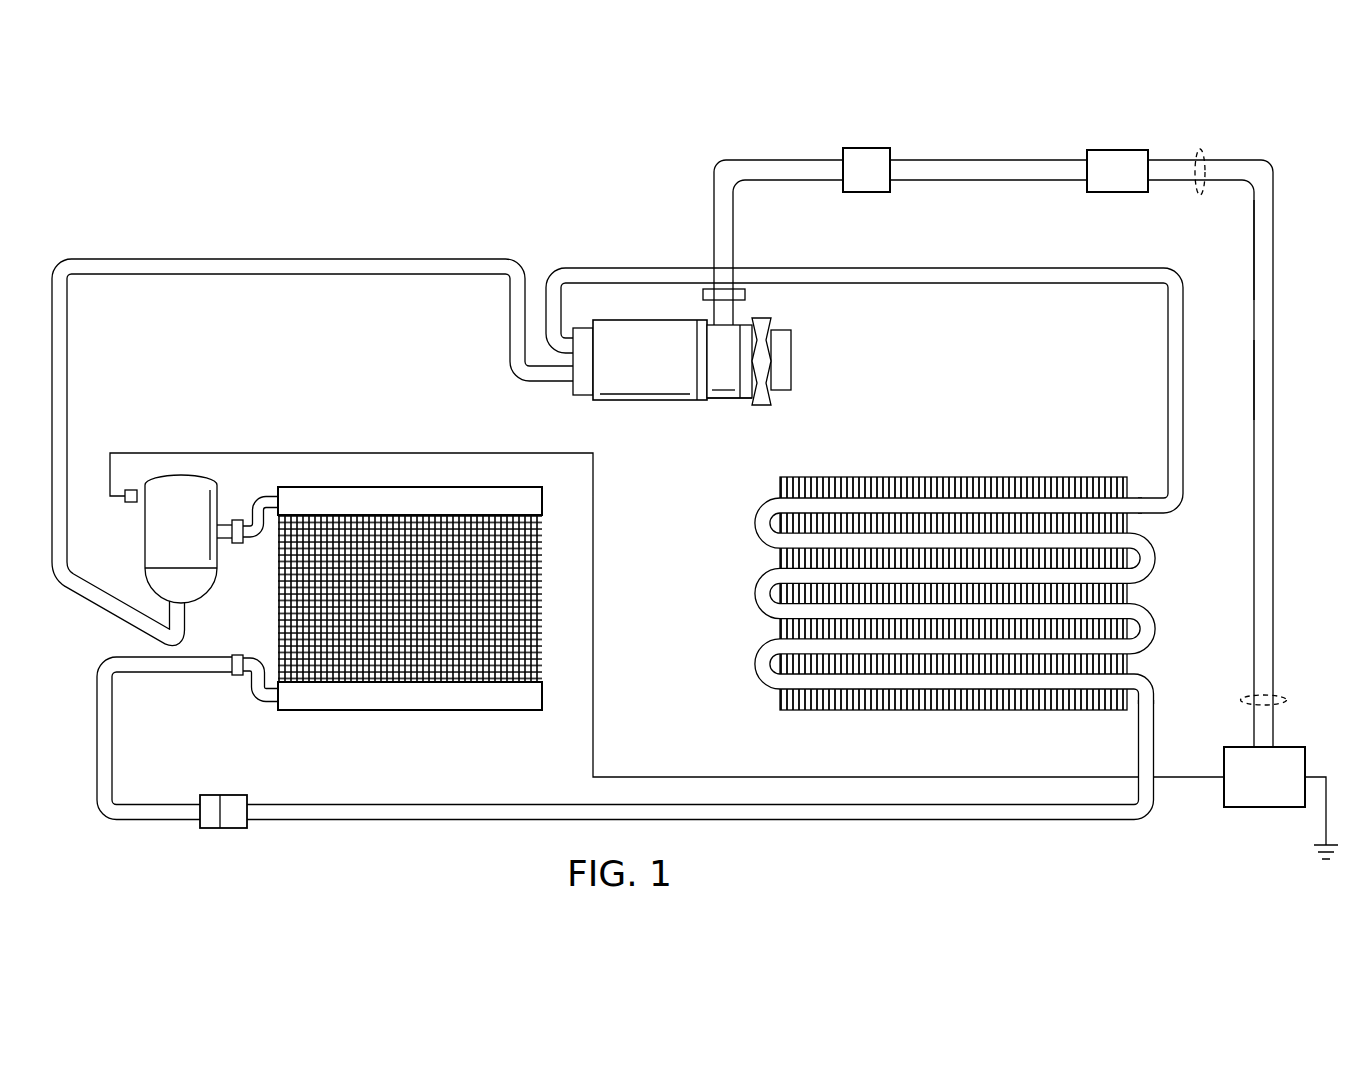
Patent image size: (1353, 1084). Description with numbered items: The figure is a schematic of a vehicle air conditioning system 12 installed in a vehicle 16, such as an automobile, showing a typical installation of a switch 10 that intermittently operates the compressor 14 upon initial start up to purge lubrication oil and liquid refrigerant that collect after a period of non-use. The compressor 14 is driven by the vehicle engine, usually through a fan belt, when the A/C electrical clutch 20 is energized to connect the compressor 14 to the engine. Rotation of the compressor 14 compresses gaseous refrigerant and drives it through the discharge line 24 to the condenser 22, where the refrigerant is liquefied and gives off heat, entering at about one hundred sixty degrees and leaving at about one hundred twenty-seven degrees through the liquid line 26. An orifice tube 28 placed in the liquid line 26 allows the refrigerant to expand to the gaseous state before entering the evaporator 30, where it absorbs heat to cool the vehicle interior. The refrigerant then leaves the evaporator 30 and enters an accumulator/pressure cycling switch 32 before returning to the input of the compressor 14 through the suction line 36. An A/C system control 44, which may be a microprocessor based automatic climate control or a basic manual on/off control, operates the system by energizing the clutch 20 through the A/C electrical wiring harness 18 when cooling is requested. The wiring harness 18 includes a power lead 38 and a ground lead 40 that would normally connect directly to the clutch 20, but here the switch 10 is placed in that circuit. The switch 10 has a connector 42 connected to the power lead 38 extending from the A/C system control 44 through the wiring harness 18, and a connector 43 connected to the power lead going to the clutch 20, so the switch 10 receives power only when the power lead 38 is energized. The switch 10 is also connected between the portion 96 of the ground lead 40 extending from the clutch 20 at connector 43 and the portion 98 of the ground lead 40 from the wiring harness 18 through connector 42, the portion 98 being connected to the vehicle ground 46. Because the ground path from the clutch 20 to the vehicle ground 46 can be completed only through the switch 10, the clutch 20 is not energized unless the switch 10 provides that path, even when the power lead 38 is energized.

The switch 10 is at (873, 147).
The air conditioning system 12 is at (669, 460).
The compressor 14 is at (648, 401).
The vehicle 16 is at (690, 642).
The A/C electrical wiring harness 18 is at (1201, 148).
The A/C electrical clutch 20 is at (736, 399).
The condenser 22 is at (972, 475).
The discharge line 24 is at (984, 265).
The liquid line 26 is at (882, 824).
The orifice tube 28 is at (226, 793).
The evaporator 30 is at (411, 714).
The accumulator/pressure cycling switch 32 is at (139, 544).
The suction line 36 is at (323, 256).
The power lead 38 is at (1275, 297).
The ground lead 40 is at (1253, 243).
The connector 42 is at (1121, 149).
The connector 43 is at (702, 294).
The A/C system control 44 is at (1266, 809).
The vehicle ground 46 is at (1313, 857).
The portion of the ground lead 96 is at (753, 321).
The portion of the ground lead 98 is at (1253, 373).